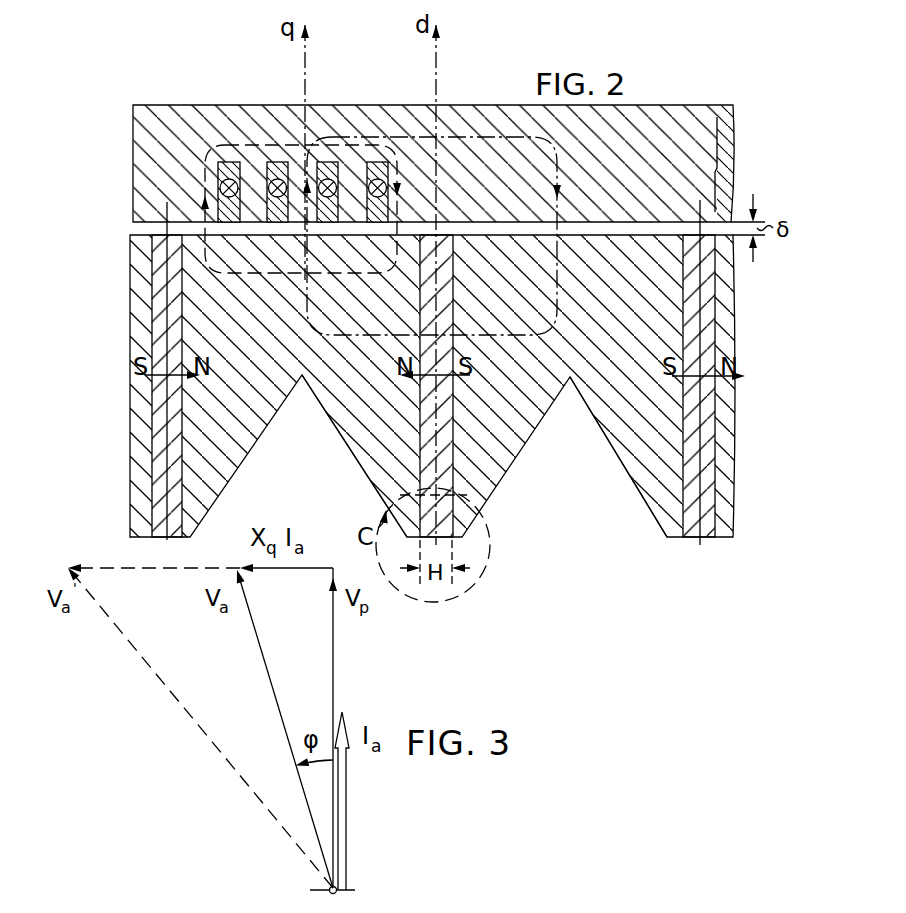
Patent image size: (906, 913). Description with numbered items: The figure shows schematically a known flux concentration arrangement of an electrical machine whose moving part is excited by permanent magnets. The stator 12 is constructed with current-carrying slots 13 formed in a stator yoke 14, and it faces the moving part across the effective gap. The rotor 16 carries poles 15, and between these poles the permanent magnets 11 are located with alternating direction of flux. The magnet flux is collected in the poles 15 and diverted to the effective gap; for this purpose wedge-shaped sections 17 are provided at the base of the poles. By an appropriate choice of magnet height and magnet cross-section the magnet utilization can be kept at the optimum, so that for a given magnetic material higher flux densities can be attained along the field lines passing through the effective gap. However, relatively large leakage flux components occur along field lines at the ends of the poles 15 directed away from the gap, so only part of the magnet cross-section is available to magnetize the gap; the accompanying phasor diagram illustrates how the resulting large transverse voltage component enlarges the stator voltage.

The permanent magnets 11 is at (712, 312).
The stator 12 is at (718, 177).
The current-carrying slots 13 is at (403, 150).
The stator yoke 14 is at (372, 124).
The poles 15 is at (262, 410).
The rotor 16 is at (124, 470).
The wedge-shaped sections 17 is at (352, 445).